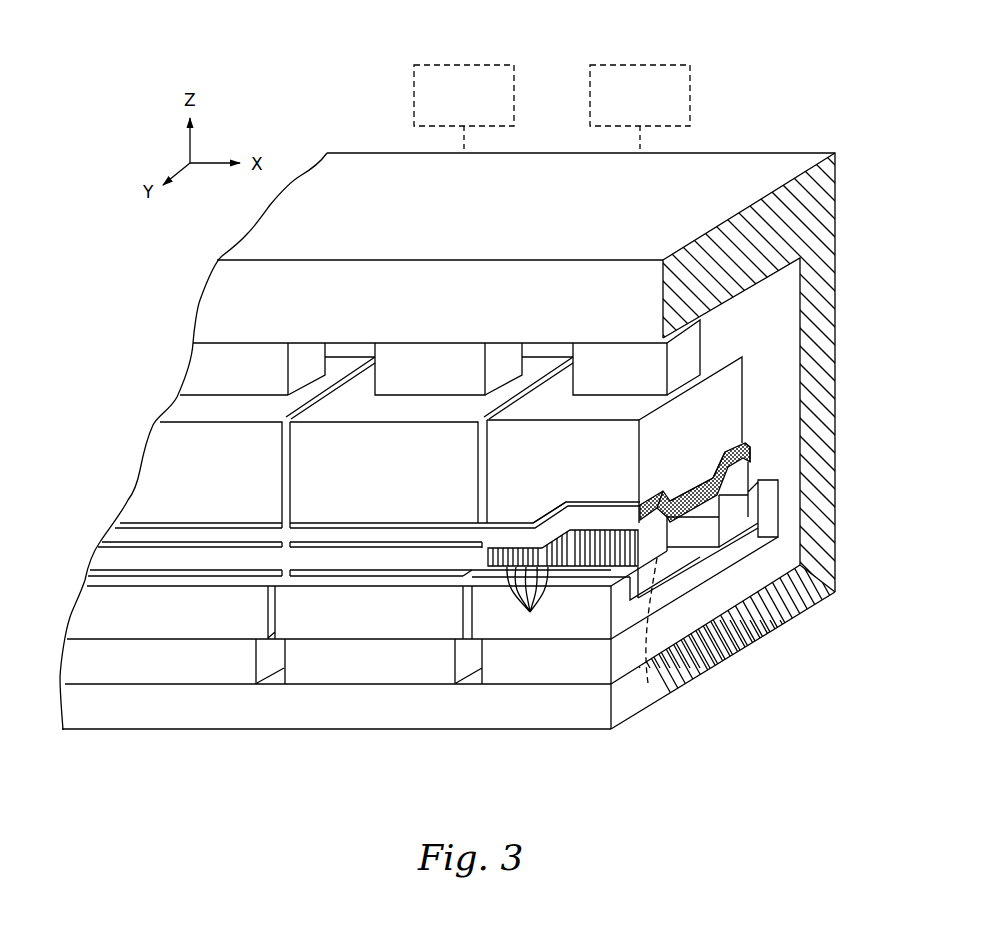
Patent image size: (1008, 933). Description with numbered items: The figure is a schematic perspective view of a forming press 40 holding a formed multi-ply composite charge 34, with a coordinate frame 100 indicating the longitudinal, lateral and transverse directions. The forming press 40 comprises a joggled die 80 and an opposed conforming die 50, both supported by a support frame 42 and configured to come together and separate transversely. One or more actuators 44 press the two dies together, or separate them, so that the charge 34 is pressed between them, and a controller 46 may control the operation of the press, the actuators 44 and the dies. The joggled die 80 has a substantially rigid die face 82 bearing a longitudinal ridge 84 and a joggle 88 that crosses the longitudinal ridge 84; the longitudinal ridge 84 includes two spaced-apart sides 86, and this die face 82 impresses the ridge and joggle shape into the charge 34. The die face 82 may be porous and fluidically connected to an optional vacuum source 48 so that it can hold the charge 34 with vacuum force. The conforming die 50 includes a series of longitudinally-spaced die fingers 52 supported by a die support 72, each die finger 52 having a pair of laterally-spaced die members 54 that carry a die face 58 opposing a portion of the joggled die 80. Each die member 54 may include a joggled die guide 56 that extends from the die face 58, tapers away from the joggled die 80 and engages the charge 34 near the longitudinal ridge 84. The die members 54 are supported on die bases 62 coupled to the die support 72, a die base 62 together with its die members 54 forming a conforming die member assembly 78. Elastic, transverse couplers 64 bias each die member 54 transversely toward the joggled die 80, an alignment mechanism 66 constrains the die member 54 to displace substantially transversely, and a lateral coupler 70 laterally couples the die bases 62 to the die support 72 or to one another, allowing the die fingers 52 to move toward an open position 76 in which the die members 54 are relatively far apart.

The multi-ply composite charge 34 is at (748, 455).
The forming press 40 is at (280, 58).
The support frame 42 is at (352, 153).
The actuators 44 is at (572, 388).
The controller 46 is at (476, 109).
The vacuum source 48 is at (652, 109).
The conforming die 50 is at (374, 666).
The die fingers 52 is at (527, 601).
The die members 54 is at (620, 530).
The joggled die guide 56 is at (733, 545).
The die face 58 is at (640, 500).
The die base 62 is at (672, 562).
The elastic, transverse couplers 64 is at (667, 560).
The alignment mechanism 66 is at (648, 683).
The lateral coupler 70 is at (633, 578).
The die support 72 is at (612, 610).
The open position 76 is at (823, 646).
The conforming die member assembly 78 is at (628, 548).
The joggled die 80 is at (356, 407).
The die face 82 is at (573, 517).
The longitudinal ridge 84 is at (710, 478).
The sides 86 is at (648, 500).
The joggle 88 is at (548, 510).
The coordinate frame 100 is at (176, 226).